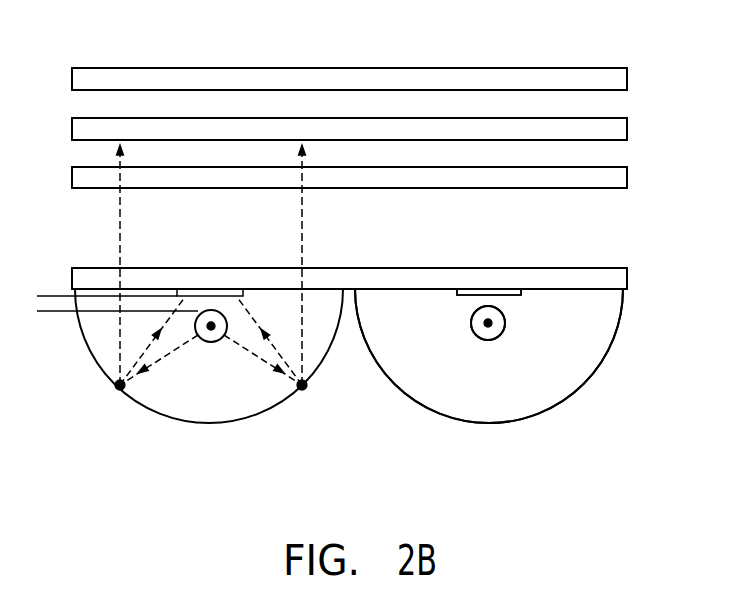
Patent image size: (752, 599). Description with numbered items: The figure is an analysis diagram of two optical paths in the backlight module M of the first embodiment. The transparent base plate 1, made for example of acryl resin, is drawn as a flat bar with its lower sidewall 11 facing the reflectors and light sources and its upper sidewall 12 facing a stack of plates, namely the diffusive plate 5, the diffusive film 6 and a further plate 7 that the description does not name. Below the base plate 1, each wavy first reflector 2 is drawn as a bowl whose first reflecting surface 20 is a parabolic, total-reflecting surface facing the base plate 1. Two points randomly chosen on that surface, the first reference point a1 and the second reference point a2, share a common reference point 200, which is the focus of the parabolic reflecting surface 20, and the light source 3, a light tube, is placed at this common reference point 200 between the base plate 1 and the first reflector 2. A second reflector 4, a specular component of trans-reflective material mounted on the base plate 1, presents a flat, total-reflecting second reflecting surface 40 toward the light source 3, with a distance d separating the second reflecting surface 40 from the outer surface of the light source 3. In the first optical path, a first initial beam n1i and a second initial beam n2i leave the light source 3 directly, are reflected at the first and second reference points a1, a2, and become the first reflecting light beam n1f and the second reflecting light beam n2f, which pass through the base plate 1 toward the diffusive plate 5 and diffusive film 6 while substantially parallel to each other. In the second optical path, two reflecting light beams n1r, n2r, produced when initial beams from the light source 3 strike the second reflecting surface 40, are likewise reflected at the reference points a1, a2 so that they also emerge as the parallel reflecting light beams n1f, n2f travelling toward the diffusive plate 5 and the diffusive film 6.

The base plate 1 is at (638, 278).
The sidewall 11 is at (580, 290).
The sidewall 12 is at (580, 267).
The first reflector 2 is at (583, 395).
The first reflecting surface 20 is at (523, 414).
The common reference point 200 is at (483, 333).
The light source 3 is at (488, 358).
The second reflector 4 is at (497, 275).
The second reflecting surface 40 is at (521, 294).
The diffusive plate 5 is at (638, 178).
The diffusive film 6 is at (638, 129).
The optical plate 7 is at (638, 79).
The backlight module M is at (55, 43).
The distance d is at (45, 250).
The first reference point a1 is at (106, 398).
The second reference point a2 is at (316, 398).
The first reflecting light beam n1f is at (119, 220).
The second reflecting light beam n2f is at (302, 220).
The first initial beam n1i is at (158, 365).
The second initial beam n2i is at (263, 362).
The reflecting light beam n1r is at (168, 352).
The reflecting light beam n2r is at (253, 352).